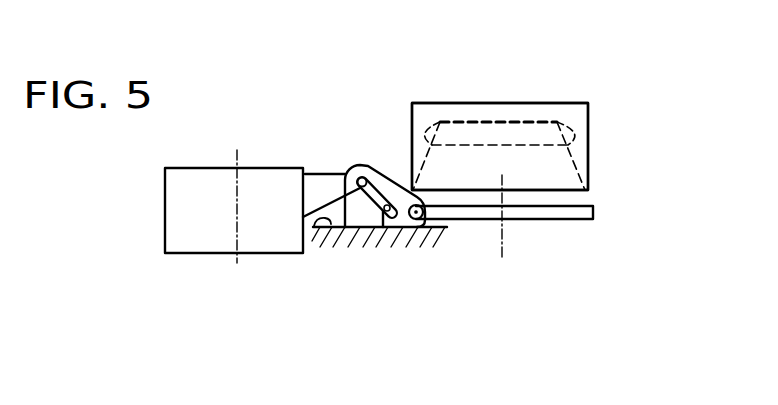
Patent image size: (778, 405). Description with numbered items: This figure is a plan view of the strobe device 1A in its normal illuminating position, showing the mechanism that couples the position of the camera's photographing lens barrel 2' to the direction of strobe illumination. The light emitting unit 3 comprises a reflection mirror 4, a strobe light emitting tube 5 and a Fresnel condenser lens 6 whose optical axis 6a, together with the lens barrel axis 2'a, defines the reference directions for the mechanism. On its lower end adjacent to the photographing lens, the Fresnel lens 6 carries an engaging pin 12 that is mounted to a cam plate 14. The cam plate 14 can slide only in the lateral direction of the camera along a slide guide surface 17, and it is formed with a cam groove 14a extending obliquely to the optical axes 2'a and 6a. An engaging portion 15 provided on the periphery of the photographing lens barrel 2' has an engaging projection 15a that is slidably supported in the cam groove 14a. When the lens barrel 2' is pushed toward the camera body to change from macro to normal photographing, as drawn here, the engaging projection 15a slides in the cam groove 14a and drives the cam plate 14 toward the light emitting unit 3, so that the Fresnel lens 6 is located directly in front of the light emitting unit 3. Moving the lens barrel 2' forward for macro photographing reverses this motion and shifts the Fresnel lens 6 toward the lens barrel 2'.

The drive unit 1A is at (560, 92).
The photographing lens barrel 2' is at (234, 233).
The motor axis 2'a is at (261, 224).
The light emitting unit 3 is at (517, 103).
The reflection mirror 4 is at (590, 165).
The strobe light emitting tube 5 is at (590, 118).
The Fresnel lens 6 is at (478, 219).
The optical axis 6a is at (503, 232).
The engaging pin 12 is at (417, 221).
The cam plate 14 is at (361, 229).
The cam groove 14a is at (375, 216).
The engaging portion 15 is at (330, 182).
The engaging projection 15a is at (364, 170).
The slide guide surface 17 is at (314, 226).